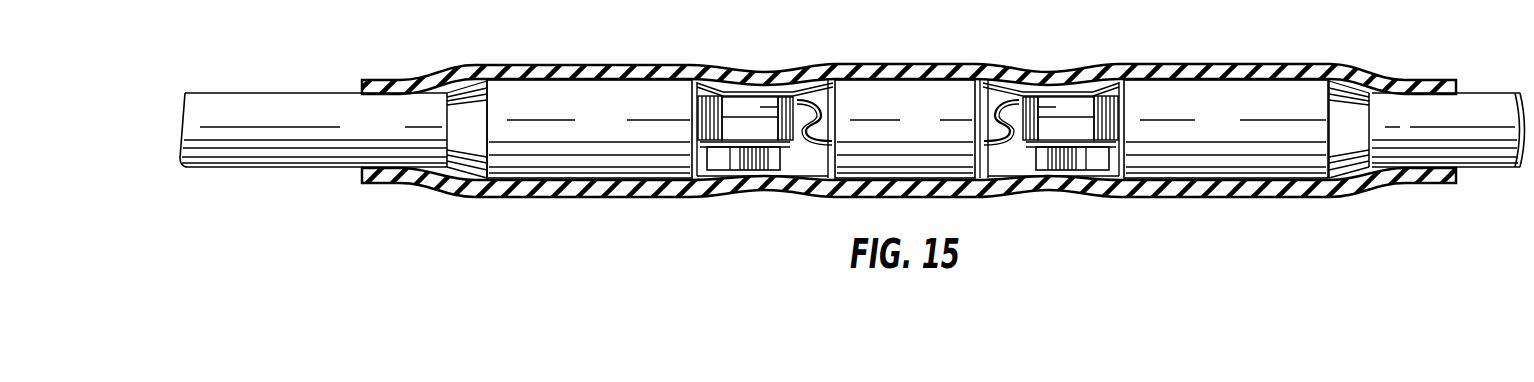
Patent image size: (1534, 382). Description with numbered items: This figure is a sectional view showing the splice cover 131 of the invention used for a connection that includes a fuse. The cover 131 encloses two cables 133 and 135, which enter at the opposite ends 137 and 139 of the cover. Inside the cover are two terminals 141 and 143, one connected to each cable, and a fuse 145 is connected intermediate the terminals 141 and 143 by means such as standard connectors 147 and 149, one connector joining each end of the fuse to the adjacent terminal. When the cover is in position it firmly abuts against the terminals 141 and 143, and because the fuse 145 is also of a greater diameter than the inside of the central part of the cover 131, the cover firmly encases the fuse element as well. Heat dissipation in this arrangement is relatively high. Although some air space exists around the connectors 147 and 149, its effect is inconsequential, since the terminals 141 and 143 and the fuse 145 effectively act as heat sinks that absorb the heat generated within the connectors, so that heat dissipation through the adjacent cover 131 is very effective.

The splice cover 131 is at (752, 190).
The cable 133 is at (233, 112).
The cable 135 is at (1485, 118).
The end of the cover 137 is at (393, 80).
The end of the cover 139 is at (1417, 78).
The terminal 141 is at (1195, 100).
The terminal 143 is at (565, 92).
The fuse 145 is at (913, 97).
The connector 147 is at (1052, 108).
The connector 149 is at (752, 110).